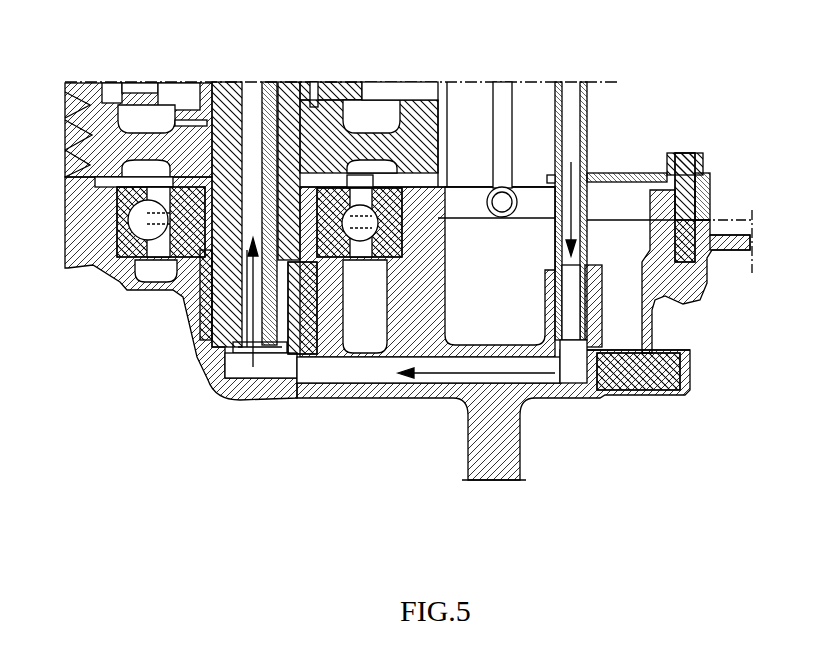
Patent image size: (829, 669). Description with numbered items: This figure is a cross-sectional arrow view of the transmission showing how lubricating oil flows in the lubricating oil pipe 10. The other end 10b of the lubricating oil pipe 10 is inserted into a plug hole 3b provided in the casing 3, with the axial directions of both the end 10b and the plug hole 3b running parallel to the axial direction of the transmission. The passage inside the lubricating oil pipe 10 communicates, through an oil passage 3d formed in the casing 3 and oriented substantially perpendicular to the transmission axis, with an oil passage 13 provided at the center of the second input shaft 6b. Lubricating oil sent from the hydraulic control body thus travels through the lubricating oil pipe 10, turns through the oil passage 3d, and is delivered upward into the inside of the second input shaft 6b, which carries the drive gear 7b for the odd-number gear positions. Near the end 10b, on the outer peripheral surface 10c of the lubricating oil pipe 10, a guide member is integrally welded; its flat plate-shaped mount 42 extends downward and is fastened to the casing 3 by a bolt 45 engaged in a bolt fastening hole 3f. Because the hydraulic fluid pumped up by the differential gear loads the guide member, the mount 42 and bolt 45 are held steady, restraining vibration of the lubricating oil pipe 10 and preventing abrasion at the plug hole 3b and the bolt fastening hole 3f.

The casing 3 is at (718, 288).
The plug hole 3b is at (578, 268).
The oil passage 3d is at (378, 385).
The bolt fastening hole 3f is at (711, 200).
The second input shaft 6b is at (228, 82).
The drive gear 7b is at (412, 100).
The lubricating oil pipe 10 is at (553, 95).
The end of lubricating oil pipe 10b is at (570, 355).
The outer peripheral surface 10c is at (590, 95).
The oil passage 13 is at (266, 82).
The mount 42 is at (620, 177).
The bolt 45 is at (690, 153).